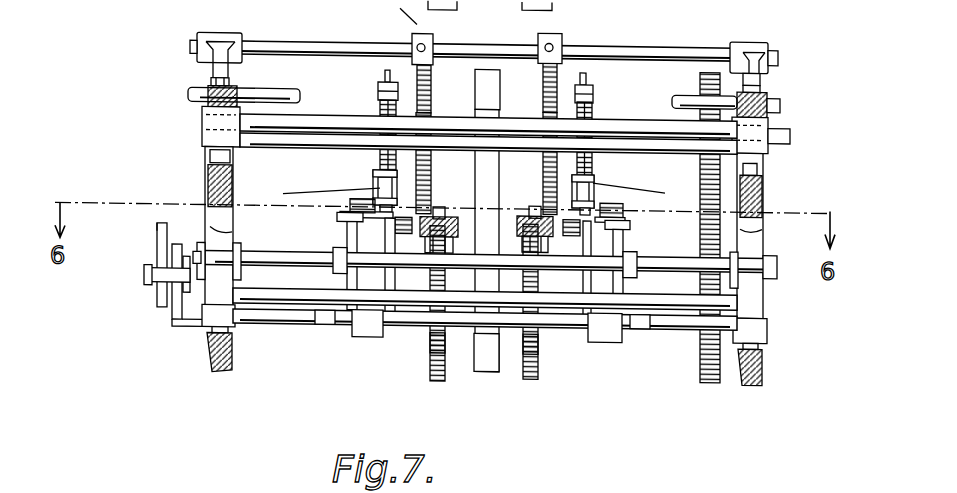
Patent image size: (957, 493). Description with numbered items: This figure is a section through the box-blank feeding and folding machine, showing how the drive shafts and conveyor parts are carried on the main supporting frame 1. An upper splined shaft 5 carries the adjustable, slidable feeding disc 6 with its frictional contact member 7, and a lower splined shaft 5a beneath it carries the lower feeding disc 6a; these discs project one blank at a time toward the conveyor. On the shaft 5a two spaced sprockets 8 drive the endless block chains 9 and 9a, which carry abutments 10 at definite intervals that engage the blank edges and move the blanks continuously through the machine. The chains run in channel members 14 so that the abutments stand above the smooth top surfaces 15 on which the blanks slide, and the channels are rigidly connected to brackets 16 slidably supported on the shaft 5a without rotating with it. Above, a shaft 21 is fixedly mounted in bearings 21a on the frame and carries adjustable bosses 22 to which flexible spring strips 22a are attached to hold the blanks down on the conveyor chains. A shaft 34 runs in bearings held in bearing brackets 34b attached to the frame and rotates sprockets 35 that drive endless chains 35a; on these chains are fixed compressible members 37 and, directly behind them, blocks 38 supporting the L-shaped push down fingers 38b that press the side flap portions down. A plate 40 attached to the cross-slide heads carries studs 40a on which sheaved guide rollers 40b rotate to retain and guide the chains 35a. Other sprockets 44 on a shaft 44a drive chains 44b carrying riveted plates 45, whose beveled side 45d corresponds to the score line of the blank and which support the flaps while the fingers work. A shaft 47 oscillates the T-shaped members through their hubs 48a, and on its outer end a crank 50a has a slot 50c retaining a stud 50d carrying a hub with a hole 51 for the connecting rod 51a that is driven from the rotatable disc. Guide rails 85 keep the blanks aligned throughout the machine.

The main supporting frame 1 is at (212, 362).
The splined shaft 5 is at (290, 150).
The splined shaft 5a is at (270, 325).
The feeding disc 6 is at (500, 104).
The lower feeding disc 6a is at (483, 356).
The frictional contact member 7 is at (490, 72).
The sprockets 8 is at (433, 346).
The block chain 9 is at (438, 364).
The block chain 9a is at (532, 374).
The abutments 10 is at (440, 212).
The channel members 14 is at (446, 214).
The top surfaces 15 is at (452, 217).
The brackets 16 is at (392, 322).
The shaft 21 is at (647, 46).
The bearings 21a is at (238, 2).
The bosses 22 is at (428, 59).
The flexible spring strips 22a is at (422, 66).
The shaft 34 is at (296, 122).
The bearing brackets 34b is at (203, 125).
The sprockets 35 is at (380, 112).
The endless chains 35a is at (374, 176).
The compressible members 37 is at (488, 237).
The blocks 38 is at (632, 78).
The L-shaped push down fingers 38b is at (384, 76).
The plate 40 is at (400, 138).
The studs 40a is at (377, 182).
The sheaved guide rollers 40b is at (469, 190).
The sprockets 44 is at (340, 238).
The shaft 44a is at (323, 326).
The chains 44b is at (325, 326).
The plates 45 is at (483, 262).
The beveled side 45d is at (391, 12).
The shaft 47 is at (248, 330).
The hubs 48a is at (352, 326).
The crank 50a is at (172, 308).
The slot 50c is at (147, 287).
The stud 50d is at (188, 255).
The hole 51 is at (148, 272).
The connecting rod 51a is at (157, 250).
The guide rails 85 is at (350, 198).